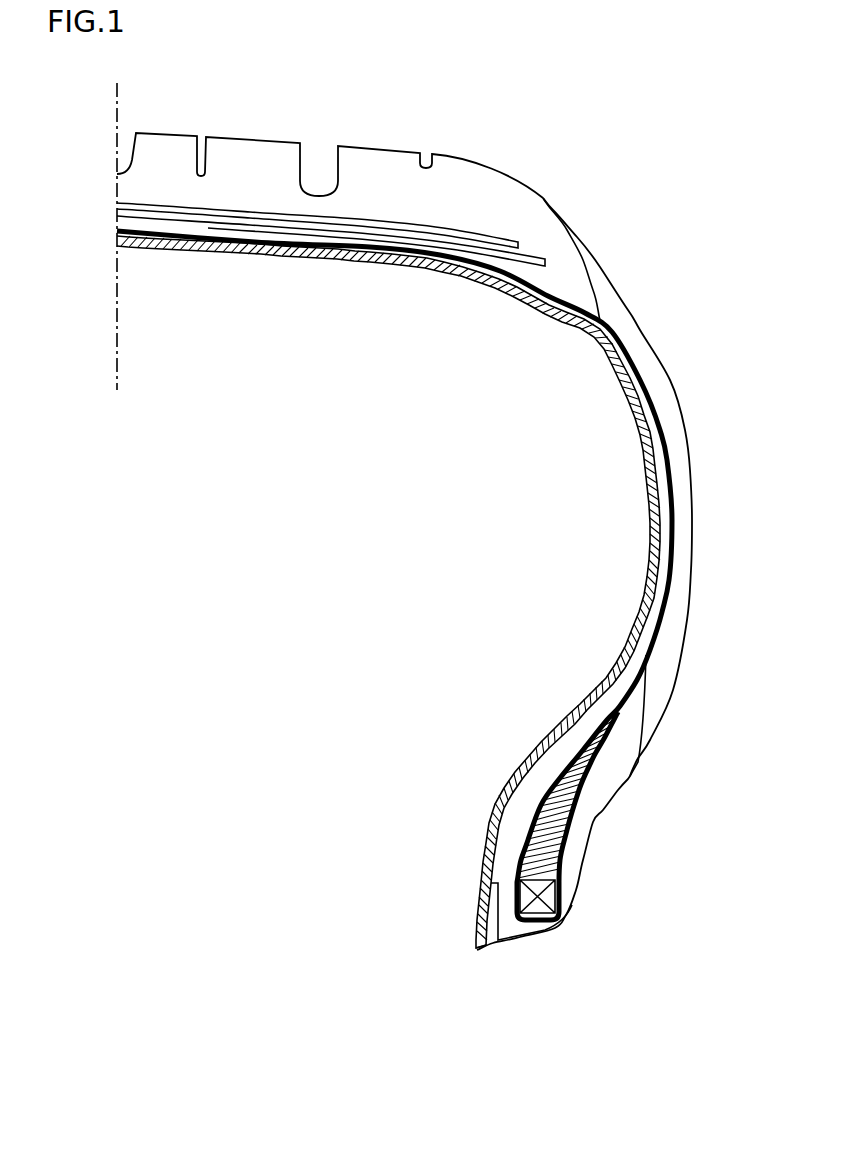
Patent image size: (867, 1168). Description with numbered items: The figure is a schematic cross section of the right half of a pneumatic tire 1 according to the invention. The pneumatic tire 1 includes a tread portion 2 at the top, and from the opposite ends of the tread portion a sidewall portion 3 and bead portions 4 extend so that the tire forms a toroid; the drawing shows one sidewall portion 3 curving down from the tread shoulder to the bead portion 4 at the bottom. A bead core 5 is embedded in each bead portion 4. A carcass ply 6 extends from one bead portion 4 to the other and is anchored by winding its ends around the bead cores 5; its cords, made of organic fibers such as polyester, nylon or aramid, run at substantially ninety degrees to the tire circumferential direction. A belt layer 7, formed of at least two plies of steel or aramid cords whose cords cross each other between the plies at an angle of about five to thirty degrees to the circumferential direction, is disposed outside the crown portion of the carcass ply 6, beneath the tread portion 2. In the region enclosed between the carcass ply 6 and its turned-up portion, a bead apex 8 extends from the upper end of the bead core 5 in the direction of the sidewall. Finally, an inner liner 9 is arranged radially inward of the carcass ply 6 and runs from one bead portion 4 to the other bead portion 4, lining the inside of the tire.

The pneumatic tire 1 is at (251, 118).
The tread portion 2 is at (402, 143).
The sidewall portion 3 is at (695, 467).
The bead portion 4 is at (626, 794).
The bead core 5 is at (537, 914).
The carcass ply 6 is at (664, 632).
The belt layer 7 is at (108, 197).
The bead apex 8 is at (548, 830).
The inner liner 9 is at (622, 665).